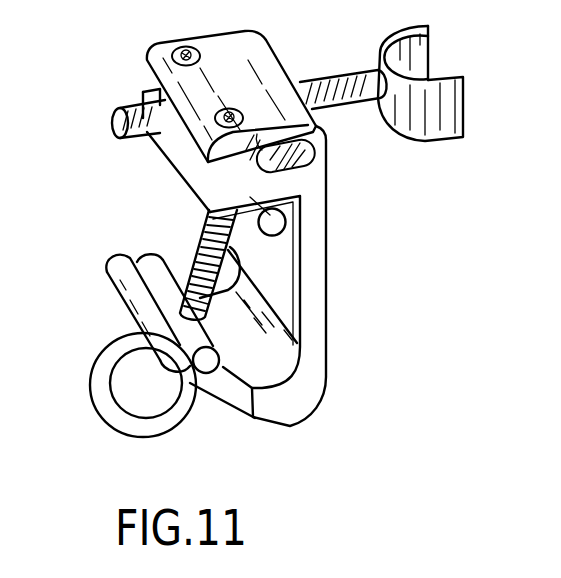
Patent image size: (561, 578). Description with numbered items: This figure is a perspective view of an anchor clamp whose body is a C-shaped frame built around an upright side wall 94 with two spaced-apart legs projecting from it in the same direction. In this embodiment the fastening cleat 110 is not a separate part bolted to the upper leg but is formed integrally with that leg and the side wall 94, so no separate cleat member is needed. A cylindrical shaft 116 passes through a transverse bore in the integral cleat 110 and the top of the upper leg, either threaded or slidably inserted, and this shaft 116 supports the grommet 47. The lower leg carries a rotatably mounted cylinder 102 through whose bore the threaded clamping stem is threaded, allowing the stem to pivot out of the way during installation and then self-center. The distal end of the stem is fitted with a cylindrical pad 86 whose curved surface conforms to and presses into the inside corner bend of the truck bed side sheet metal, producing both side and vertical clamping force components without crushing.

The grommet 47 is at (458, 110).
The pad 86 is at (284, 222).
The side wall 94 is at (317, 300).
The cylinder 102 is at (250, 400).
The cleat 110 is at (148, 50).
The cylindrical shaft 116 is at (110, 123).